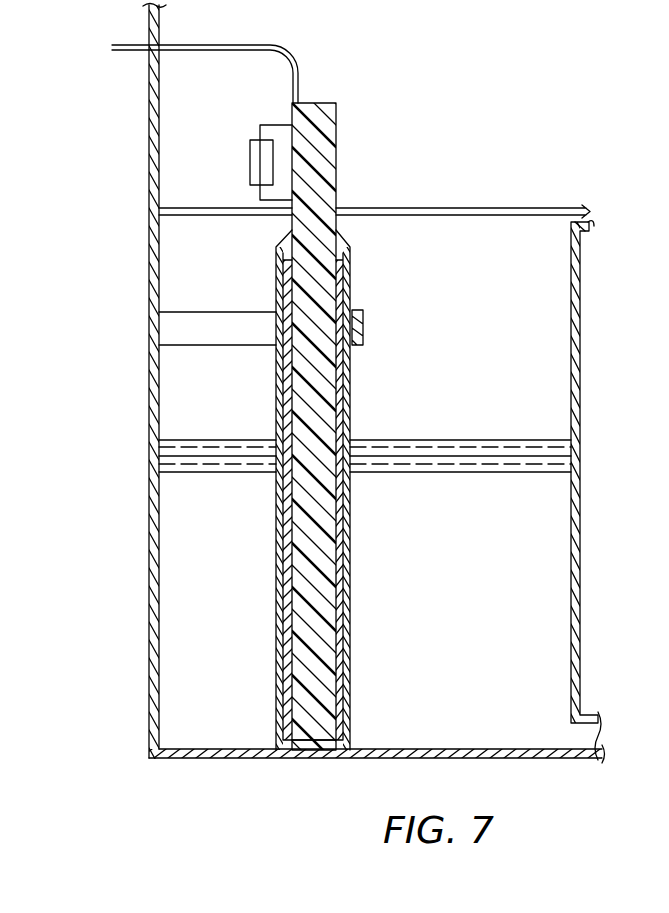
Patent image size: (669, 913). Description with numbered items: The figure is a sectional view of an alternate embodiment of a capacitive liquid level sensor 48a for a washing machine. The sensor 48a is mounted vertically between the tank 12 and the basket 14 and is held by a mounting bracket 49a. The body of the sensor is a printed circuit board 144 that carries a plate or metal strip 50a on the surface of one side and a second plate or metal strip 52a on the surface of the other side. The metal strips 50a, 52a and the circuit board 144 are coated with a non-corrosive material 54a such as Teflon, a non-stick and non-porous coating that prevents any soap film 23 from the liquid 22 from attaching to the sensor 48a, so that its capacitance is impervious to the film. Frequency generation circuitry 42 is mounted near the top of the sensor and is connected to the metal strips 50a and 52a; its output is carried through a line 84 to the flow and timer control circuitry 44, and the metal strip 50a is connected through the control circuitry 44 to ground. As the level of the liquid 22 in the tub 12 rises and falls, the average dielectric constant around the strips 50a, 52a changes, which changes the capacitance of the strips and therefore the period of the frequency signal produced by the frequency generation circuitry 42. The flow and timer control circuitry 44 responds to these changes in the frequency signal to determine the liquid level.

The tank 12 is at (152, 530).
The basket 14 is at (580, 300).
The liquid 22 is at (500, 541).
The soap film 23 is at (462, 440).
The frequency generation circuitry 42 is at (250, 160).
The flow and timer control circuitry 44 is at (105, 48).
The liquid level sensor 48a is at (278, 612).
The mounting bracket 49a is at (195, 312).
The metal strip 50a is at (287, 560).
The metal strip 52a is at (342, 512).
The non-corrosive material 54a is at (348, 640).
The line 84 is at (208, 46).
The printed circuit board 144 is at (310, 730).